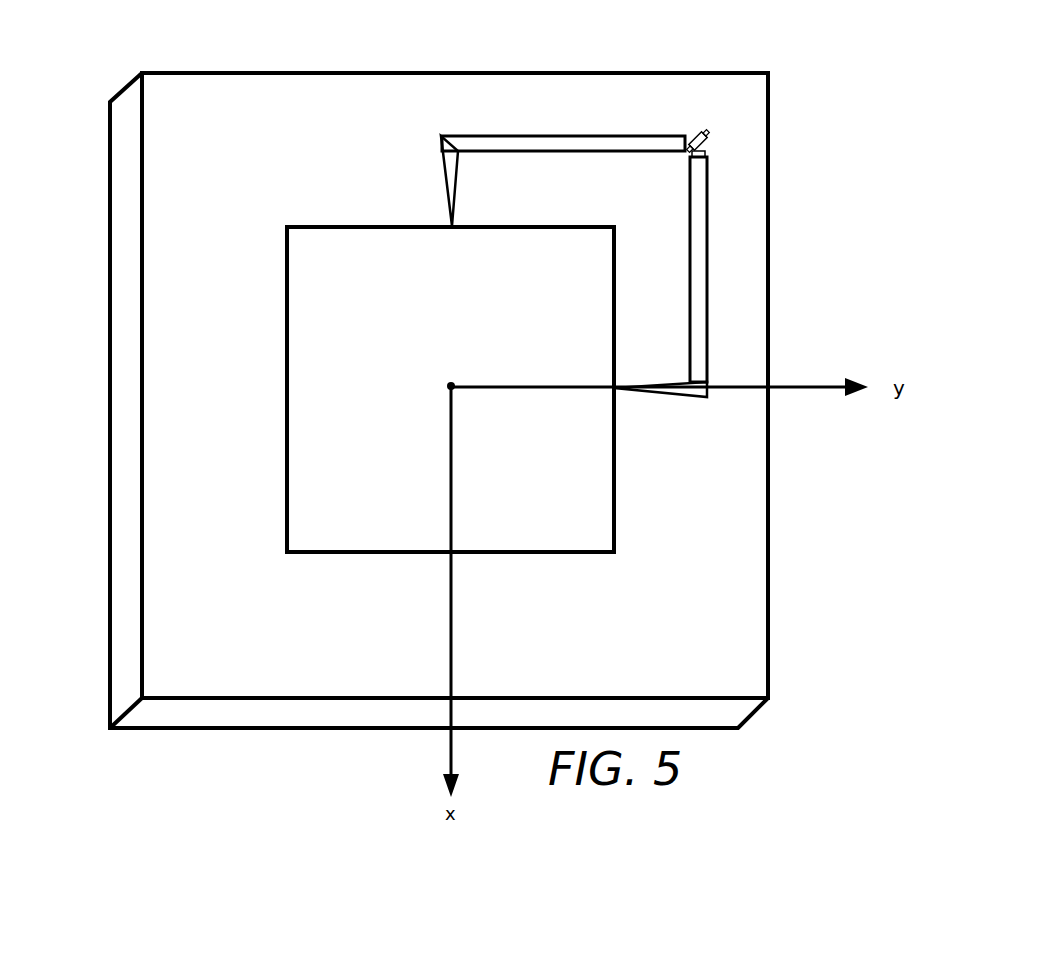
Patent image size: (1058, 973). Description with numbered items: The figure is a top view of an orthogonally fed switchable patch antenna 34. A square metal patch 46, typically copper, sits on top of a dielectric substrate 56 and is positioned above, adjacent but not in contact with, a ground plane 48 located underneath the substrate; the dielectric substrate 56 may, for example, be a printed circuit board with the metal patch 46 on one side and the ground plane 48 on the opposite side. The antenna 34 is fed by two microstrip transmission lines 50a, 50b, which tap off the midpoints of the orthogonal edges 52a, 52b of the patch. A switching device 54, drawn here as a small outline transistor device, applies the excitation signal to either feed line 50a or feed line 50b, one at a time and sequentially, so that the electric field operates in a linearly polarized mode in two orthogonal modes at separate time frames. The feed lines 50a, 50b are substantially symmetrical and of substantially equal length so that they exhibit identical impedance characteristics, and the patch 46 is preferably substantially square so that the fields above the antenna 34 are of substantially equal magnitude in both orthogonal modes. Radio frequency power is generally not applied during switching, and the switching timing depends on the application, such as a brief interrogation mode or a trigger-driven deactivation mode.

The switchable patch antenna 34 is at (753, 22).
The metal patch 46 is at (390, 314).
The ground plane 48 is at (109, 456).
The microstrip transmission line 50a is at (573, 136).
The microstrip transmission line 50b is at (712, 250).
The orthogonal edge 52a is at (388, 226).
The orthogonal edge 52b is at (615, 455).
The switching device 54 is at (701, 132).
The dielectric substrate 56 is at (597, 644).